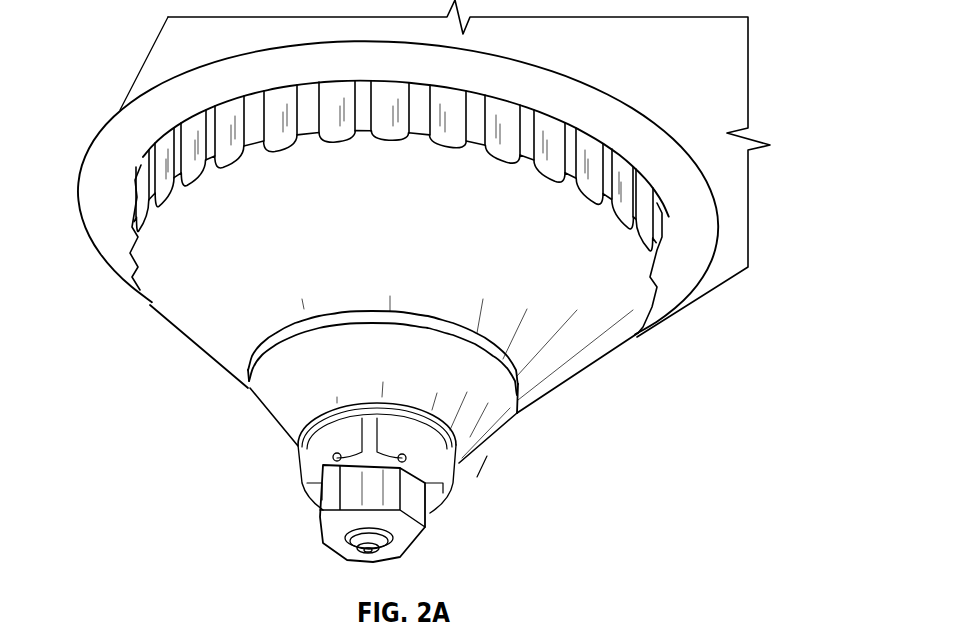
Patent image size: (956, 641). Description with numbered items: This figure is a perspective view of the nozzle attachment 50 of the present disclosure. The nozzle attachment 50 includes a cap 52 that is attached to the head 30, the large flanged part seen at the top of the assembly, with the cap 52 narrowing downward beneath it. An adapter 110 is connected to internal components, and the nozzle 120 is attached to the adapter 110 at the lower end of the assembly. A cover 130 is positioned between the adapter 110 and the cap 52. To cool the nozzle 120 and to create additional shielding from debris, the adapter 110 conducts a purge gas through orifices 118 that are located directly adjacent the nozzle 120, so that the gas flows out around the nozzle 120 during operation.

The head 30 is at (702, 243).
The nozzle attachment 50 is at (125, 366).
The cap 52 is at (568, 386).
The adapter 110 is at (298, 462).
The orifices 118 is at (428, 514).
The nozzle 120 is at (357, 513).
The cover 130 is at (493, 440).